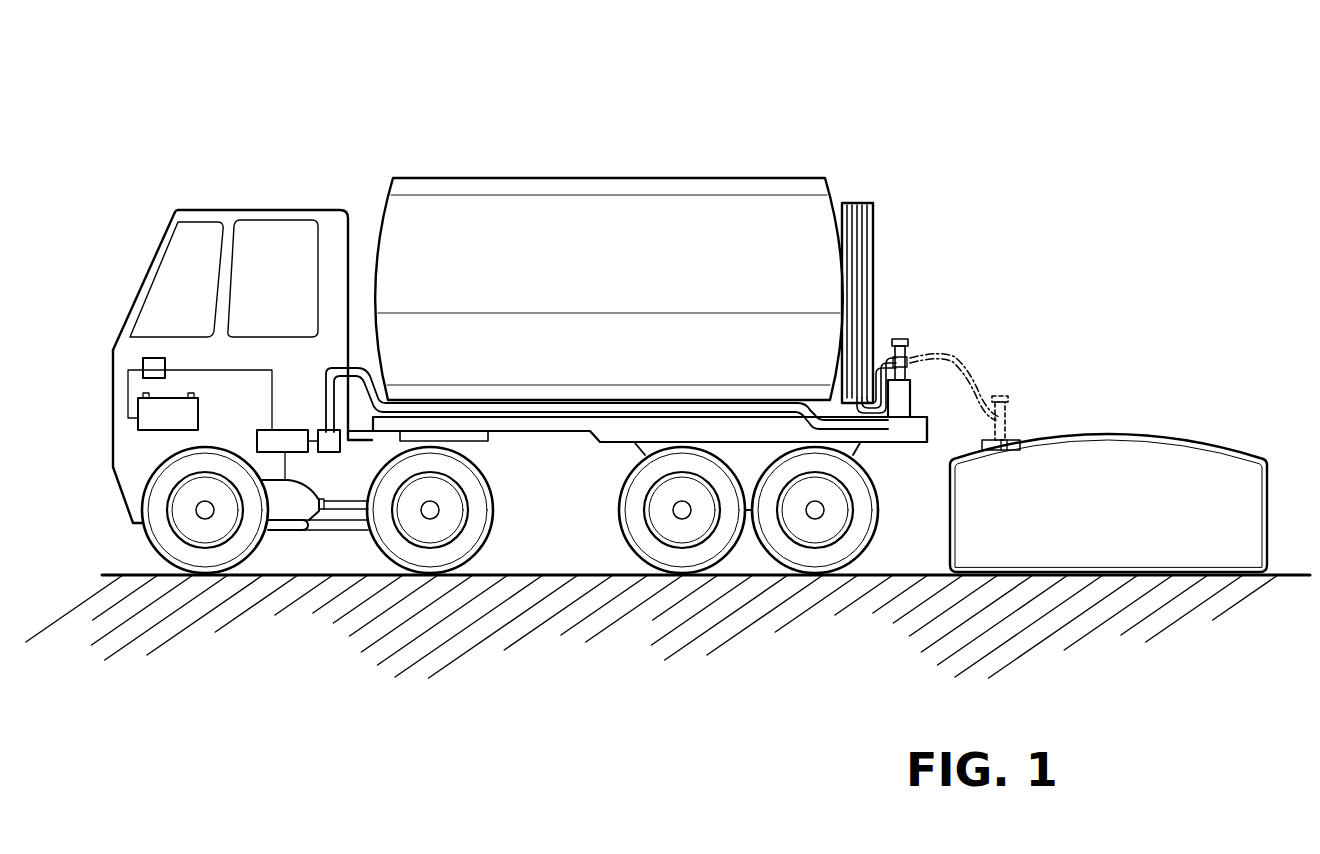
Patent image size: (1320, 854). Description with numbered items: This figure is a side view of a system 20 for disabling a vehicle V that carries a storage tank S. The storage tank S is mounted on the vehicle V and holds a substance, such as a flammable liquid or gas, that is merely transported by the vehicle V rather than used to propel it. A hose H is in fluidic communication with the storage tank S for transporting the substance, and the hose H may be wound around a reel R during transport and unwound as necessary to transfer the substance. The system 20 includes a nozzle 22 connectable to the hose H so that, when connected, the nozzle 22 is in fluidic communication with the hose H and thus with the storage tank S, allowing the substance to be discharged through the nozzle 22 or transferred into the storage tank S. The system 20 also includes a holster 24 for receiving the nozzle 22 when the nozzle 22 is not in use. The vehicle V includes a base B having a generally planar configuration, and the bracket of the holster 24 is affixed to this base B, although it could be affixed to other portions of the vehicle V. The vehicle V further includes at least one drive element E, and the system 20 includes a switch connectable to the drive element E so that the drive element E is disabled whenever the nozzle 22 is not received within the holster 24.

The vehicle V is at (308, 210).
The storage tank S is at (546, 178).
The hose H is at (855, 203).
The reel R is at (875, 241).
The system 20 is at (952, 168).
The nozzle 22 is at (900, 337).
The holster 24 is at (912, 393).
The base B is at (930, 403).
The drive element E is at (316, 513).